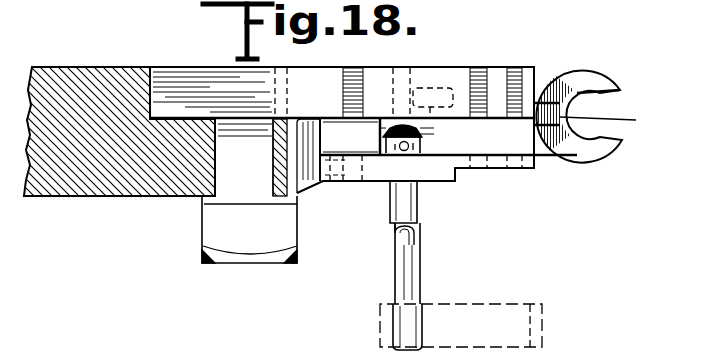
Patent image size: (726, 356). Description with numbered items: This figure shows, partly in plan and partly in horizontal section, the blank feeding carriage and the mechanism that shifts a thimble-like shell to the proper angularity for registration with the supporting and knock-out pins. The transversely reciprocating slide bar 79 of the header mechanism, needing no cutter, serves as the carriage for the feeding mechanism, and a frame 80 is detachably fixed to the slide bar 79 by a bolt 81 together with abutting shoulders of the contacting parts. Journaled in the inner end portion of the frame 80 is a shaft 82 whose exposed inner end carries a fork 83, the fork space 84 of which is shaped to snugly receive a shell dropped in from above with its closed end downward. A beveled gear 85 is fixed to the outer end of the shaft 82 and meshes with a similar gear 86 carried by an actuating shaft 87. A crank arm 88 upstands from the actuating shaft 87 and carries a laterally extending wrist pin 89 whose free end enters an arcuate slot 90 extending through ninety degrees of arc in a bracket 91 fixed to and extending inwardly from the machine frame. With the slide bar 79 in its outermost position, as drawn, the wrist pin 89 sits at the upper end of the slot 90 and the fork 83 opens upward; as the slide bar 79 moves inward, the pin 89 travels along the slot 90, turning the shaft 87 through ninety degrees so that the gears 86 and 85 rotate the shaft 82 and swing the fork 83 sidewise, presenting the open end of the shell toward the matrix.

The slide bar 79 is at (66, 182).
The frame 80 is at (440, 75).
The bolt 81 is at (230, 172).
The shaft 82 is at (568, 84).
The fork 83 is at (612, 90).
The fork space 84 is at (610, 123).
The beveled gear 85 is at (415, 140).
The gear 86 is at (362, 140).
The actuating shaft 87 is at (390, 211).
The crank arm 88 is at (398, 240).
The wrist pin 89 is at (420, 273).
The arcuate slot 90 is at (545, 321).
The bracket 91 is at (535, 302).